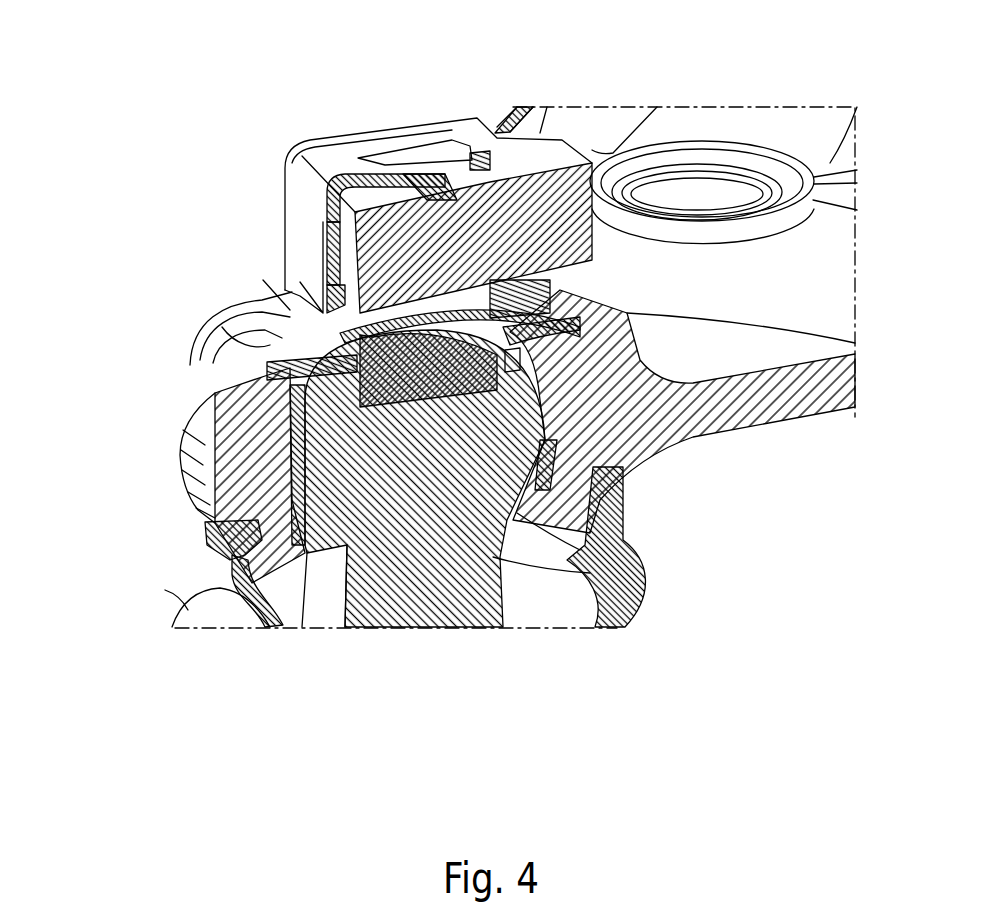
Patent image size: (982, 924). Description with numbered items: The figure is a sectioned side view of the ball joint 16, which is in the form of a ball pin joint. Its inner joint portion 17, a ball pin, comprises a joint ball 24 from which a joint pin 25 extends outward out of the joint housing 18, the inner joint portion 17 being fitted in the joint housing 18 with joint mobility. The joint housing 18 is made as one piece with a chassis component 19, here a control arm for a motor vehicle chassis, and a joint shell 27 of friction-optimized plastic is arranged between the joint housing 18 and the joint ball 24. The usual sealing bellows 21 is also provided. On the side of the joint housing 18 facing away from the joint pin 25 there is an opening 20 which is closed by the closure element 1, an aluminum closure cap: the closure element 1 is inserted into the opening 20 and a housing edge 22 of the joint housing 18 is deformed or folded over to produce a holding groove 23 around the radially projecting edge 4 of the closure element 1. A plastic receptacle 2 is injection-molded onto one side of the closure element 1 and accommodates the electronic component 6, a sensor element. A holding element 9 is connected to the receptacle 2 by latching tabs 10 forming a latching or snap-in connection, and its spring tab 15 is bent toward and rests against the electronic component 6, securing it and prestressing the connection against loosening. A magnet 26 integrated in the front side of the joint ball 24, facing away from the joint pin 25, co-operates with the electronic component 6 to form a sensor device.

The closure element 1 is at (250, 337).
The receptacle 2 is at (270, 287).
The edge 4 is at (855, 343).
The electronic component 6 is at (533, 157).
The holding element 9 is at (278, 160).
The latching tabs 10 is at (320, 268).
The spring tab 15 is at (423, 197).
The ball joint 16 is at (152, 274).
The inner joint portion 17 is at (345, 648).
The joint housing 18 is at (202, 404).
The chassis component 19 is at (736, 135).
The opening 20 is at (578, 292).
The sealing bellows 21 is at (187, 598).
The housing edge 22 is at (235, 314).
The holding groove 23 is at (255, 367).
The joint ball 24 is at (590, 550).
The joint pin 25 is at (460, 595).
The magnet 26 is at (560, 397).
The joint shell 27 is at (560, 357).